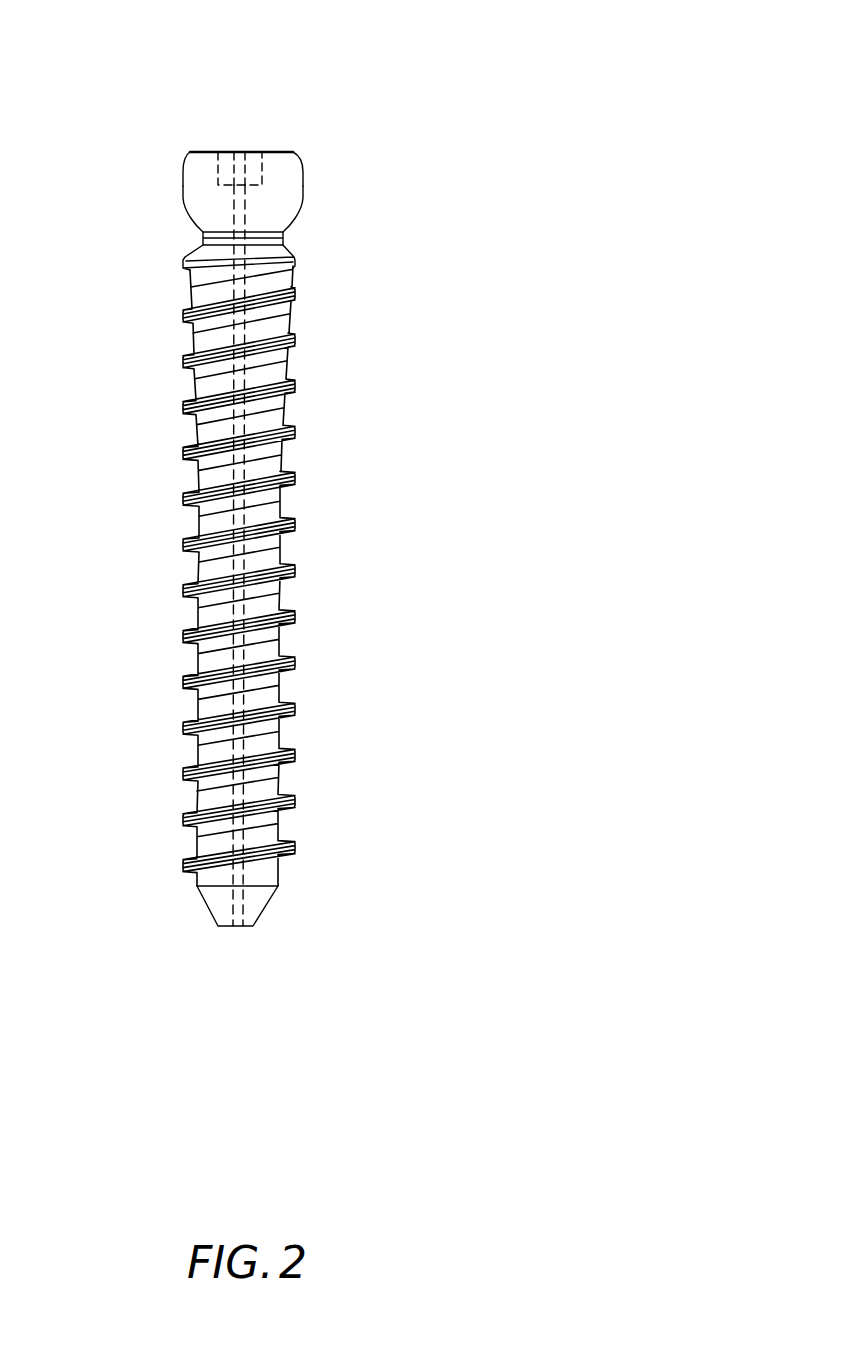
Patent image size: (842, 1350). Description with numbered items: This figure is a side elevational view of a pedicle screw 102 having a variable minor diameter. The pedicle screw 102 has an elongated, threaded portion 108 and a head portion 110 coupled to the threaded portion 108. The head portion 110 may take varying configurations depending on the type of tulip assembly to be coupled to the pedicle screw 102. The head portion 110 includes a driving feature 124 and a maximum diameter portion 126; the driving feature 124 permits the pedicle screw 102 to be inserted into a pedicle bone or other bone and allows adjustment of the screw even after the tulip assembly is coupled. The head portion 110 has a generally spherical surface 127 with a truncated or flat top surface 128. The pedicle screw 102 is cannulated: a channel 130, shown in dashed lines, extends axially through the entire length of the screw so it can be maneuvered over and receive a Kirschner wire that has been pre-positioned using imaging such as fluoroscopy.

The pedicle screw 102 is at (515, 68).
The threaded portion 108 is at (357, 422).
The head portion 110 is at (324, 187).
The driving feature 124 is at (262, 150).
The maximum diameter portion 126 is at (183, 200).
The generally spherical surface 127 is at (183, 186).
The flat top surface 128 is at (280, 147).
The channel 130 is at (232, 908).